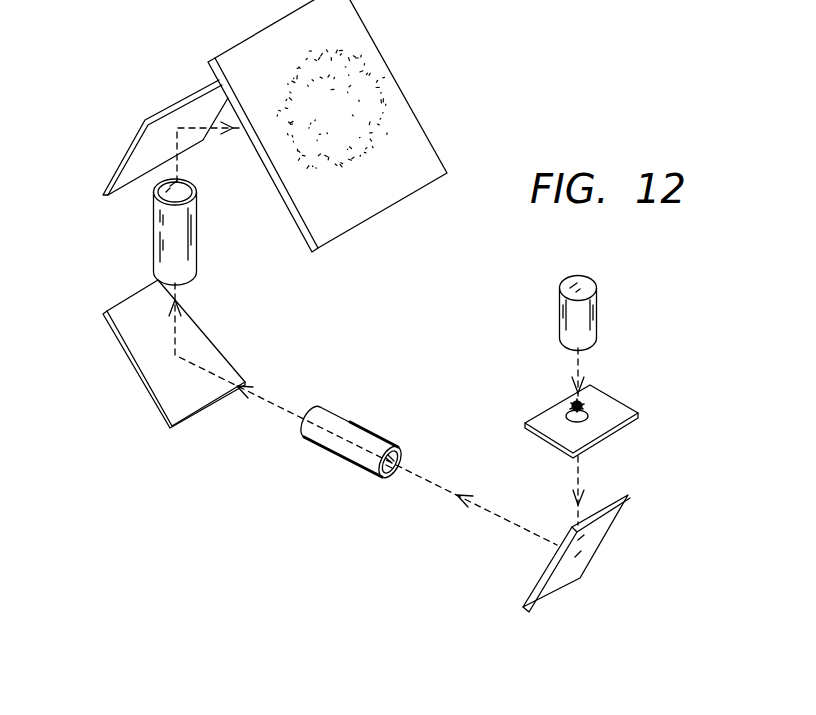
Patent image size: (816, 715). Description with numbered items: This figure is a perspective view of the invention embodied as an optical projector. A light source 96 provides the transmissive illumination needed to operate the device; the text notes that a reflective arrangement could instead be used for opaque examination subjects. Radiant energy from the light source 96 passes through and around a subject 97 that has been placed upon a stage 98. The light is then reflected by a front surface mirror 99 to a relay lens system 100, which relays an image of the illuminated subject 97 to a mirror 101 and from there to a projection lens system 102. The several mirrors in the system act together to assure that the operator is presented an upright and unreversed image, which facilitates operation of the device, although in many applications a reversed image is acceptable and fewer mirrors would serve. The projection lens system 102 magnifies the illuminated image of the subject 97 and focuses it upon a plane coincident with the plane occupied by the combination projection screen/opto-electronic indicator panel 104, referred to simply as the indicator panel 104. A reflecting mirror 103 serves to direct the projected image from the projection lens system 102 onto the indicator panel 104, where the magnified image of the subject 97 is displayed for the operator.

The light source 96 is at (597, 297).
The subject 97 is at (567, 395).
The stage 98 is at (620, 403).
The front surface mirror 99 is at (605, 541).
The relay lens system 100 is at (348, 425).
The mirror 101 is at (123, 342).
The projection lens system 102 is at (197, 212).
The reflecting mirror 103 is at (140, 133).
The combination projection screen/opto-electronic indicator panel 104 is at (385, 62).